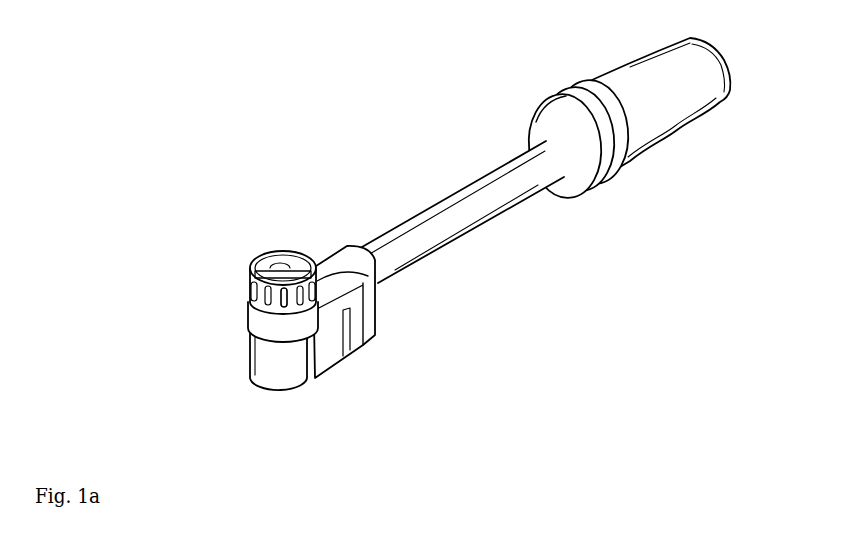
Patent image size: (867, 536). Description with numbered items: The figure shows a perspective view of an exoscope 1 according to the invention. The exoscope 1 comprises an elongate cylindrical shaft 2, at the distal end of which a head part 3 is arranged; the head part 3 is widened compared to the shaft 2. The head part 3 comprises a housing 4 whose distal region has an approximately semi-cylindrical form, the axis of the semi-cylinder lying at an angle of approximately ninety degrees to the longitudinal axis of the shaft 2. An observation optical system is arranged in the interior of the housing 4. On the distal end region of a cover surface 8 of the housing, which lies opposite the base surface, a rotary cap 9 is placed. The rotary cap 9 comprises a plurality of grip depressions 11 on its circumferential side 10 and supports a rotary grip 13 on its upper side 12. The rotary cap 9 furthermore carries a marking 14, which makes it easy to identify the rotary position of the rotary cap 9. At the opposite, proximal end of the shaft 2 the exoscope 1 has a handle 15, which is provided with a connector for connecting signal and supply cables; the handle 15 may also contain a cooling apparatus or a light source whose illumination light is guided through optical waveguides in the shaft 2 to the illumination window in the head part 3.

The exoscope 1 is at (465, 211).
The shaft 2 is at (457, 215).
The head part 3 is at (259, 264).
The housing 4 is at (327, 353).
The cover surface 8 is at (338, 262).
The rotary cap 9 is at (259, 296).
The circumferential side 10 is at (250, 297).
The grip depressions 11 is at (248, 290).
The upper side 12 is at (273, 259).
The rotary grip 13 is at (300, 265).
The marking 14 is at (288, 283).
The handle 15 is at (613, 83).